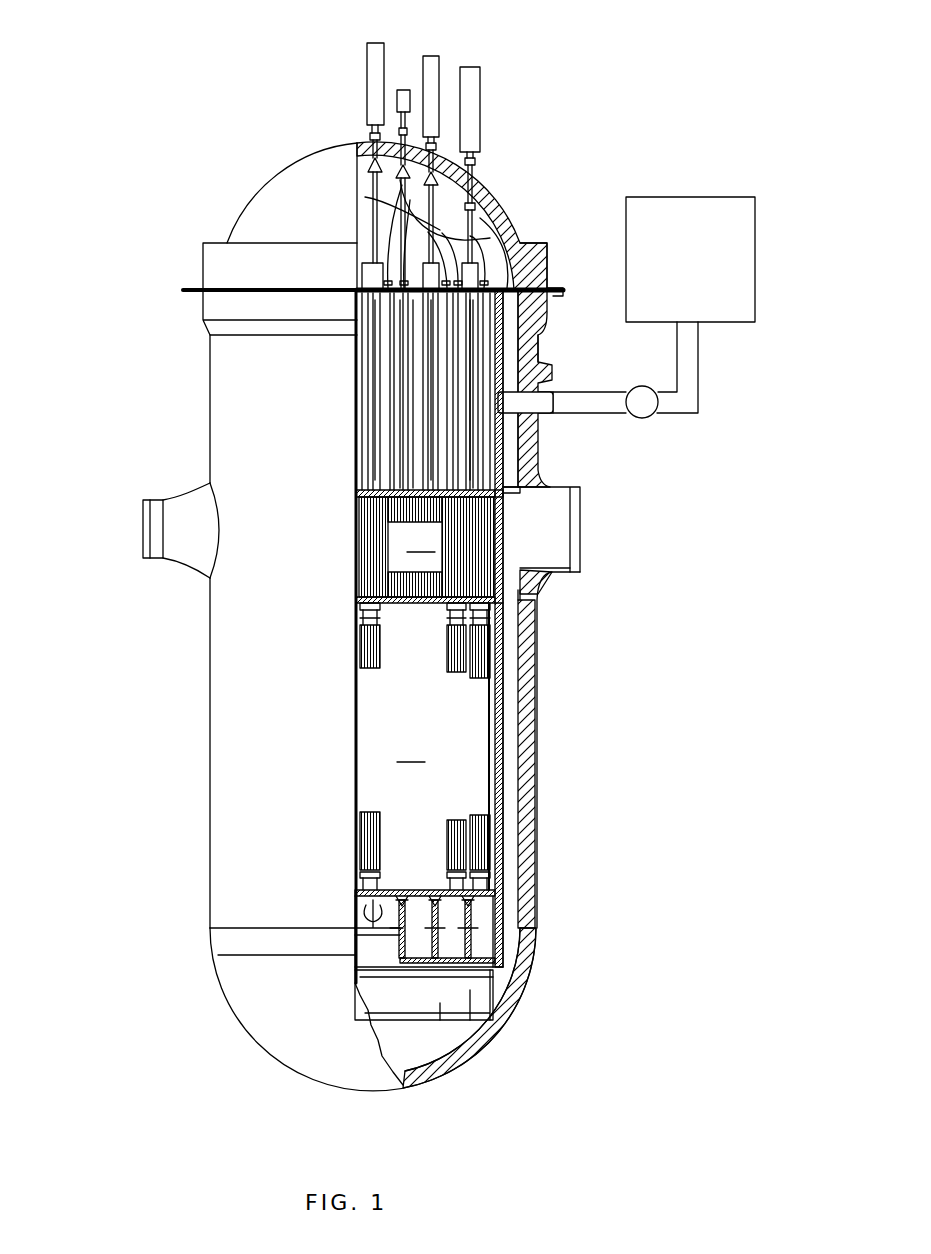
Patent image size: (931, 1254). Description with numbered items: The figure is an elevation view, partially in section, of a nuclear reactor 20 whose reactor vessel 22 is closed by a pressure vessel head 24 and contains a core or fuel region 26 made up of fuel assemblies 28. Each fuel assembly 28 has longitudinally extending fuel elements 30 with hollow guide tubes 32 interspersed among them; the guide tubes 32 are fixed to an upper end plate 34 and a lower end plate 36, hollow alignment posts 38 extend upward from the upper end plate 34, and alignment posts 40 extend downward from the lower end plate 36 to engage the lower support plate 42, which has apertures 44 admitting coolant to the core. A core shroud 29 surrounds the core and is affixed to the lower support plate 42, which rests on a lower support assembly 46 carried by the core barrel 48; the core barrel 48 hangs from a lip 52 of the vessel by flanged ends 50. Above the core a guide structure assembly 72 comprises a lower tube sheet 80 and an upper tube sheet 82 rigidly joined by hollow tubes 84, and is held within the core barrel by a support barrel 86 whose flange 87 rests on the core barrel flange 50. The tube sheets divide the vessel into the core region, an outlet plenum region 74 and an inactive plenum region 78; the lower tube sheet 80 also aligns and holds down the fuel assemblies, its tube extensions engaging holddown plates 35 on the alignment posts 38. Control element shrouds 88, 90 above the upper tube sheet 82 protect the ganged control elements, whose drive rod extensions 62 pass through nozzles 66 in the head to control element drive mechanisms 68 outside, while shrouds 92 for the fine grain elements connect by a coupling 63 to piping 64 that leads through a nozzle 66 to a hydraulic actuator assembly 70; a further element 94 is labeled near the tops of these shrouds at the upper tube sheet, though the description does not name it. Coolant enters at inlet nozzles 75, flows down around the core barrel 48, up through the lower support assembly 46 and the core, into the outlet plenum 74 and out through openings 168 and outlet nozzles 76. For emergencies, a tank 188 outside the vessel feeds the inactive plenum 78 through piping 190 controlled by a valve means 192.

The nuclear reactor 20 is at (185, 413).
The reactor vessel 22 is at (533, 717).
The pressure vessel head 24 is at (263, 193).
The core or fuel region 26 is at (411, 750).
The fuel assemblies 28 is at (447, 847).
The core shroud 29 is at (505, 840).
The fuel elements 30 is at (382, 846).
The hollow guide tubes 32 is at (377, 660).
The upper end plate 34 is at (380, 616).
The holddown plates 35 is at (500, 608).
The lower end plate 36 is at (363, 880).
The hollow alignment posts 38 is at (362, 612).
The alignment posts 40 is at (358, 893).
The lower support plate 42 is at (388, 890).
The apertures 44 is at (365, 918).
The lower support assembly 46 is at (481, 943).
The core barrel 48 is at (505, 768).
The flanged ends 50 is at (538, 330).
The lip 52 is at (544, 303).
The drive rod extension 62 is at (395, 178).
The coupling 63 is at (496, 250).
The piping 64 is at (365, 197).
The nozzles 66 is at (396, 133).
The control element drive mechanisms 68 is at (367, 60).
The hydraulic actuator assembly 70 is at (404, 88).
The guide structure assembly 72 is at (493, 505).
The outlet plenum region 74 is at (421, 540).
The inlet nozzles 75 is at (143, 555).
The outlet nozzles 76 is at (585, 510).
The inactive plenum region 78 is at (413, 430).
The lower tube sheet 80 is at (357, 600).
The upper tube sheet 82 is at (358, 496).
The hollow tubes 84 is at (367, 538).
The support barrel 86 is at (507, 440).
The flange 87 is at (520, 290).
The control element shrouds 88 is at (430, 375).
The control element shrouds 90 is at (347, 370).
The shrouds or tubing 92 is at (473, 482).
The thermal sleeve 94 is at (378, 283).
The openings 168 is at (513, 563).
The tank 188 is at (755, 286).
The piping 190 is at (697, 382).
The valve means 192 is at (643, 418).